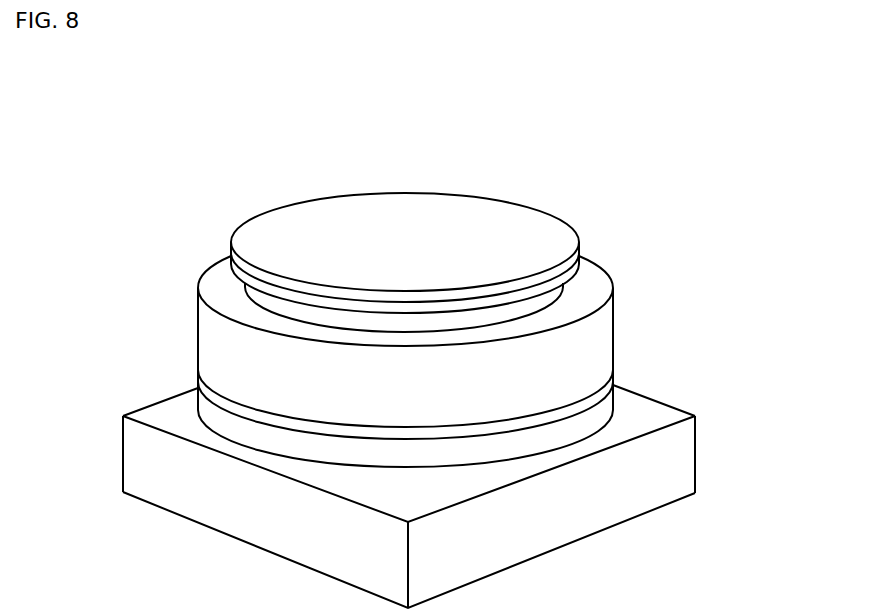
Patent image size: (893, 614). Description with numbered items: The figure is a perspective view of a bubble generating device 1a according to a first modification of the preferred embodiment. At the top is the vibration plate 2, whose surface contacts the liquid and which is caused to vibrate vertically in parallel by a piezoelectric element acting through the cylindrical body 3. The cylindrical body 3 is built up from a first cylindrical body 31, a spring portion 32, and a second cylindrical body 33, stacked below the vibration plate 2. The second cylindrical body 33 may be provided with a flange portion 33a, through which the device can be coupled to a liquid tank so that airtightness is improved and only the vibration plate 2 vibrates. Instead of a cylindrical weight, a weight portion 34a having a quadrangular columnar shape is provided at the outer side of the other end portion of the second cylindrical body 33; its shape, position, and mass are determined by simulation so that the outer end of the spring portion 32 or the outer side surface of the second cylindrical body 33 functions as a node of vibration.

The bubble generating device 1a is at (576, 144).
The vibration plate 2 is at (478, 223).
The cylindrical body 3 is at (709, 196).
The first cylindrical body 31 is at (600, 300).
The spring portion 32 is at (552, 297).
The second cylindrical body 33 is at (618, 338).
The flange portion 33a is at (198, 386).
The weight portion 34a is at (642, 413).